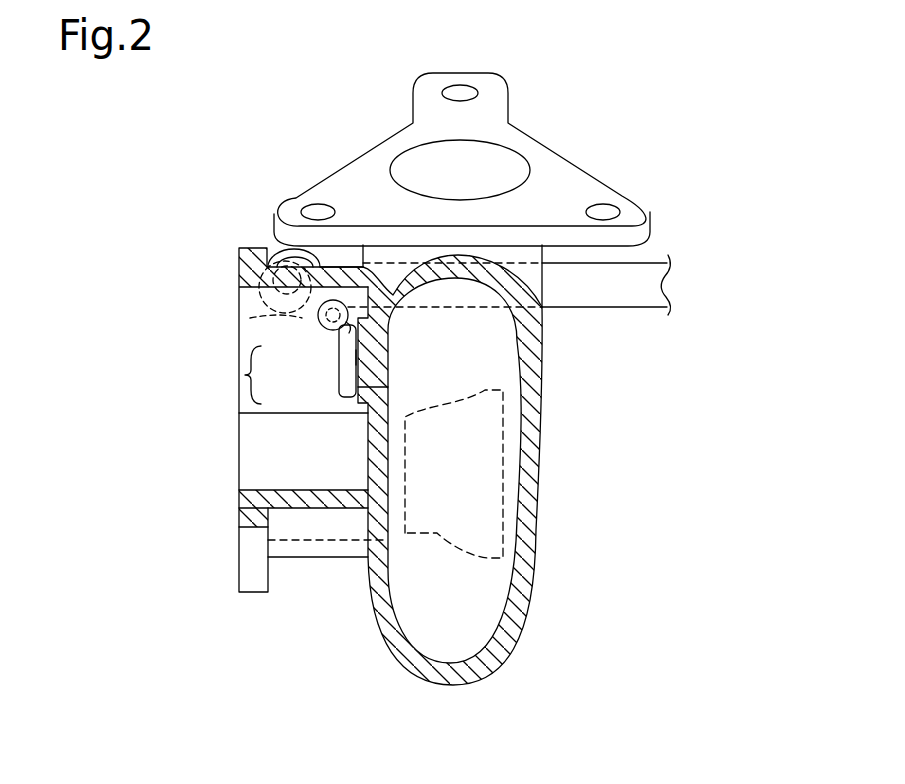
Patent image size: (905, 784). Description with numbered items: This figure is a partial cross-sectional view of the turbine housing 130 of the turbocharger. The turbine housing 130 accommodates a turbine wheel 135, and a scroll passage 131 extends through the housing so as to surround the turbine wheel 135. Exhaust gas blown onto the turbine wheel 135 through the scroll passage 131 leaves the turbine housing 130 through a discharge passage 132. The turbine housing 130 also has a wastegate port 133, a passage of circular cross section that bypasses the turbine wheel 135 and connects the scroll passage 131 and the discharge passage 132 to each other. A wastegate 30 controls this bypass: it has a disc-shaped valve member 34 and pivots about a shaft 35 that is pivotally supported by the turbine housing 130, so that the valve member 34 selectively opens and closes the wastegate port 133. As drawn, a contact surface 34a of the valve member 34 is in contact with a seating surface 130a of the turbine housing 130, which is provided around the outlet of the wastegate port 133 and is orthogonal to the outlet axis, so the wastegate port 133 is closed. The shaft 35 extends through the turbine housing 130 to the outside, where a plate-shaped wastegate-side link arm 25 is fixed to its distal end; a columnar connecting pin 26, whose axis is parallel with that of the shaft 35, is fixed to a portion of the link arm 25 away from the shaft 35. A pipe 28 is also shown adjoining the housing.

The scroll passage 131 is at (507, 190).
The pipe 28 is at (630, 297).
The turbine housing 130 is at (513, 650).
The discharge passage 132 is at (257, 490).
The seating surface 130a is at (353, 388).
The wastegate port 133 is at (376, 387).
The connecting pin 26 is at (313, 324).
The wastegate-side link arm 25 is at (250, 318).
The wastegate 30 is at (234, 375).
The shaft 35 is at (322, 327).
The valve member 34 is at (339, 367).
The contact surface 34a is at (362, 357).
The turbine wheel 135 is at (435, 535).